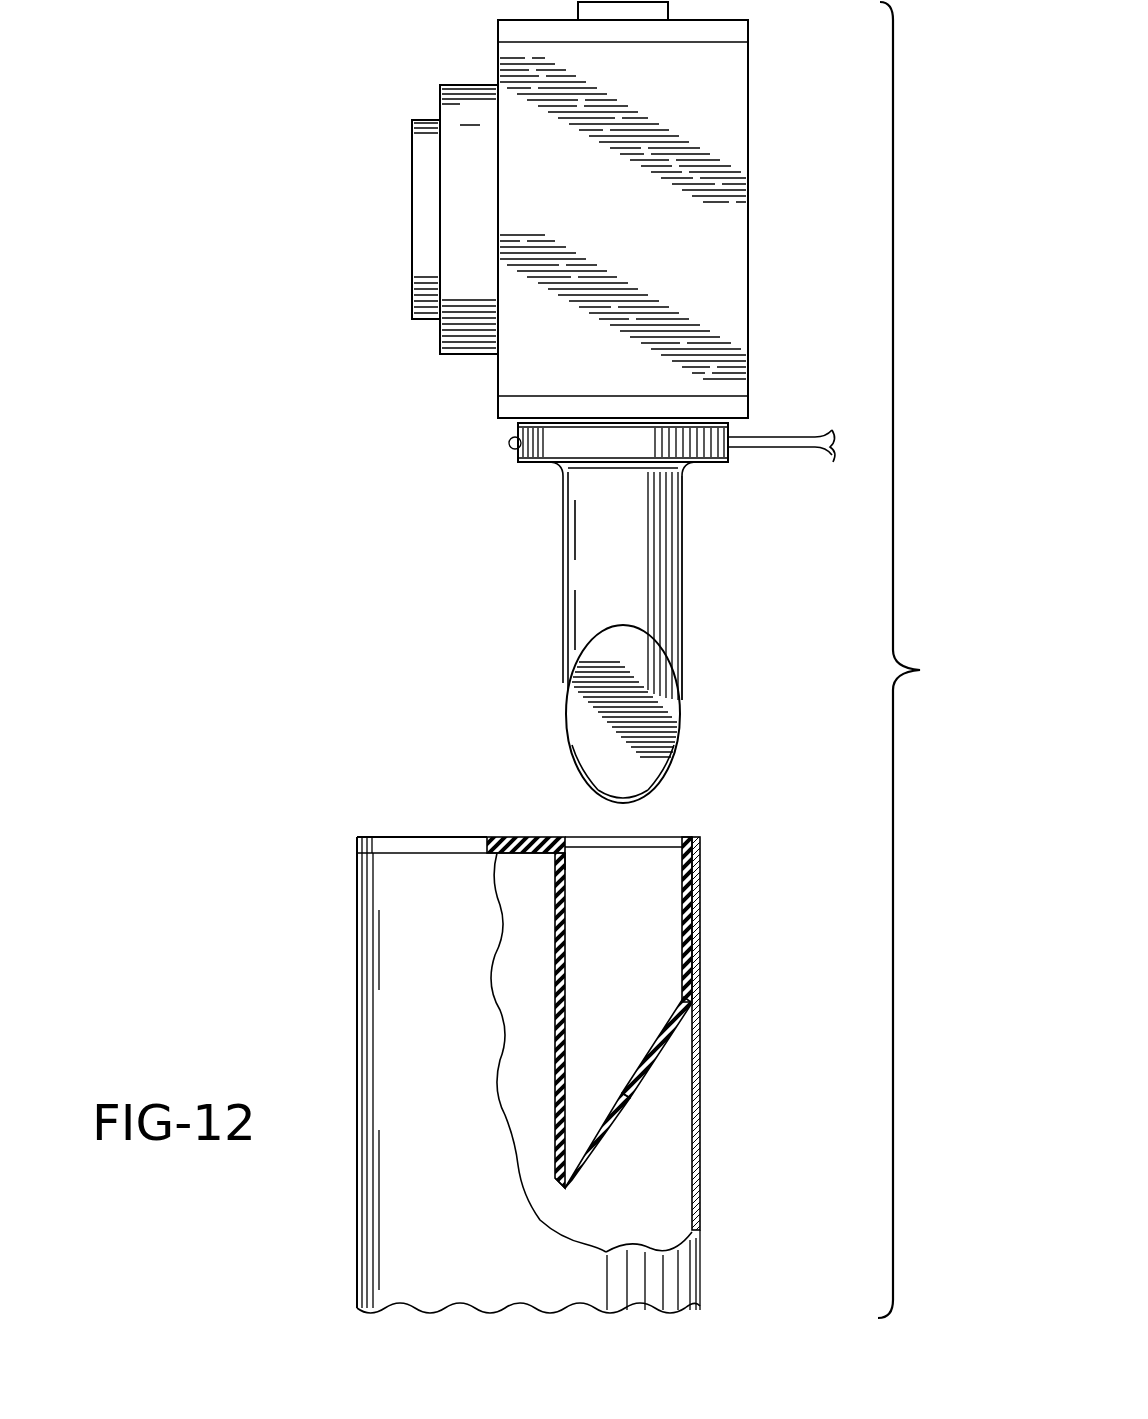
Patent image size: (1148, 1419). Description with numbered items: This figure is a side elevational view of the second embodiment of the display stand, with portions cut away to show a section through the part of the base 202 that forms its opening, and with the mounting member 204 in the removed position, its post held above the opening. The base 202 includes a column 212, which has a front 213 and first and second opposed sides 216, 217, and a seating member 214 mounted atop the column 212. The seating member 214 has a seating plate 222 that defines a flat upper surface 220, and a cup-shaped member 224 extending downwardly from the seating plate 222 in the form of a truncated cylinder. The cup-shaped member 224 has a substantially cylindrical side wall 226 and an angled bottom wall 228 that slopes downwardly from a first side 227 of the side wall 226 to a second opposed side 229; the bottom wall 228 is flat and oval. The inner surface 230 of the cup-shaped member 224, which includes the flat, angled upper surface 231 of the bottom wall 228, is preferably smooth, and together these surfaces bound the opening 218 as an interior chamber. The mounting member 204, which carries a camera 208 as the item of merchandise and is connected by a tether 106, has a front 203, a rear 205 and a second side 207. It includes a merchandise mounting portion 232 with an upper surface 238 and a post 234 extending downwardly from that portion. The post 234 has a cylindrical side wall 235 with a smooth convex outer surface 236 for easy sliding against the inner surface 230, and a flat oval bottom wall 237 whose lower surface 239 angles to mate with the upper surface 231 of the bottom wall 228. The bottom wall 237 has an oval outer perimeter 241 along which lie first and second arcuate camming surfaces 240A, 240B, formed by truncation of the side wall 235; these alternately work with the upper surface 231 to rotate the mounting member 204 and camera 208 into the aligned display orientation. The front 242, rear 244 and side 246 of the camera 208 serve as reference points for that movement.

The tether 106 is at (805, 451).
The base 202 is at (342, 1210).
The front 203 is at (512, 432).
The mounting member 204 is at (545, 475).
The rear 205 is at (750, 428).
The second side 207 is at (618, 440).
The camera 208 is at (497, 48).
The column 212 is at (355, 935).
The front 213 is at (525, 1257).
The seating member 214 is at (352, 840).
The first side 216 is at (355, 1025).
The second side 217 is at (703, 1083).
The opening 218 is at (657, 875).
The upper surface 220 is at (425, 800).
The seating plate 222 is at (385, 835).
The cup-shaped member 224 is at (553, 887).
The side wall 226 is at (553, 955).
The first side 227 is at (698, 990).
The bottom wall 228 is at (635, 1110).
The second side 229 is at (553, 1160).
The inner surface 230 is at (567, 928).
The upper surface 231 is at (638, 1068).
The merchandise mounting portion 232 is at (518, 455).
The post 234 is at (683, 605).
The side wall 235 is at (672, 575).
The outer surface 236 is at (595, 566).
The bottom wall 237 is at (648, 697).
The upper surface 238 is at (552, 420).
The lower surface 239 is at (590, 722).
The first arcuate camming surface 240A is at (665, 770).
The second arcuate camming surface 240B is at (578, 773).
The outer perimeter 241 is at (590, 790).
The front 242 is at (412, 222).
The rear 244 is at (752, 235).
The side 246 is at (683, 275).